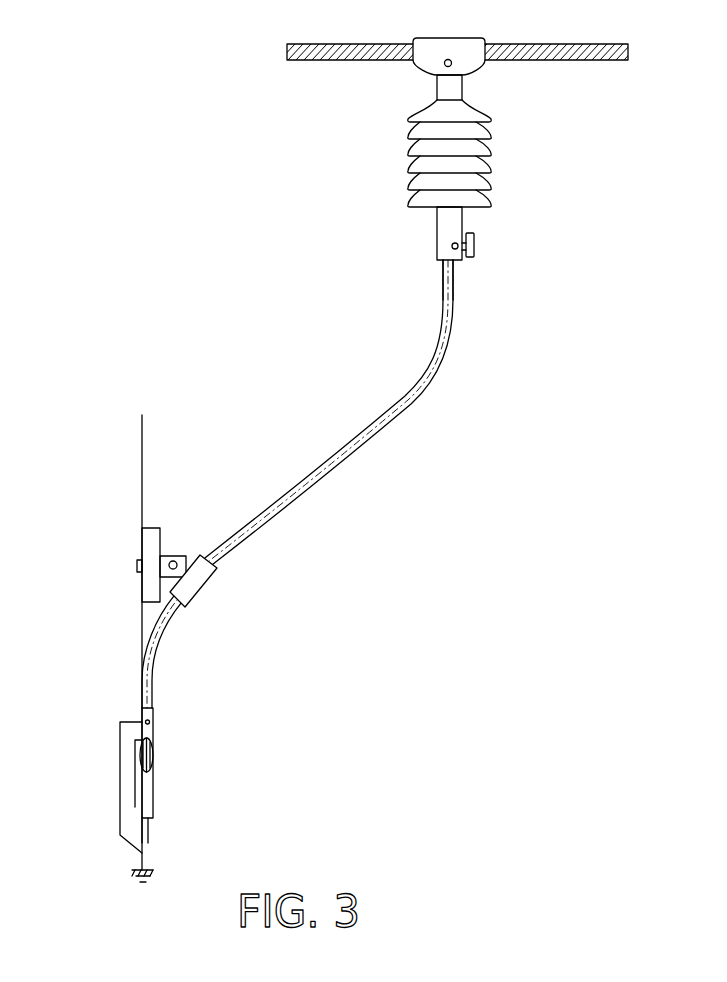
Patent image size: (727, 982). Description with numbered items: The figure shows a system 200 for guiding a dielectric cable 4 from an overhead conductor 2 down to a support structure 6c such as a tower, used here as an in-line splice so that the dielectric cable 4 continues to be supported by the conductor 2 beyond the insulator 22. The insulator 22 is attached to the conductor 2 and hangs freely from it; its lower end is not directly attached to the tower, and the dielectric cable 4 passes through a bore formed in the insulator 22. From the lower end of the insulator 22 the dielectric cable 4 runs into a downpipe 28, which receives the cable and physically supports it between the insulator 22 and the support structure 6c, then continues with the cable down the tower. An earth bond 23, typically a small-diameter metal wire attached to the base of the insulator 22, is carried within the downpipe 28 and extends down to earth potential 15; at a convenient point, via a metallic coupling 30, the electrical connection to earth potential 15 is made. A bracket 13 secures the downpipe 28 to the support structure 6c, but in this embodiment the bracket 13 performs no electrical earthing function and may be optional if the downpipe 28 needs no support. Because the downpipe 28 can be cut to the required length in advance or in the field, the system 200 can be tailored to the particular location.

The conductor 2 is at (558, 44).
The dielectric cable 4 is at (381, 44).
The insulator 22 is at (491, 152).
The earth bond 23 is at (297, 497).
The downpipe 28 is at (393, 422).
The bracket 13 is at (182, 552).
The metallic coupling 30 is at (153, 712).
The earth potential 15 is at (132, 871).
The support structure 6c is at (103, 553).
The system 200 is at (203, 322).